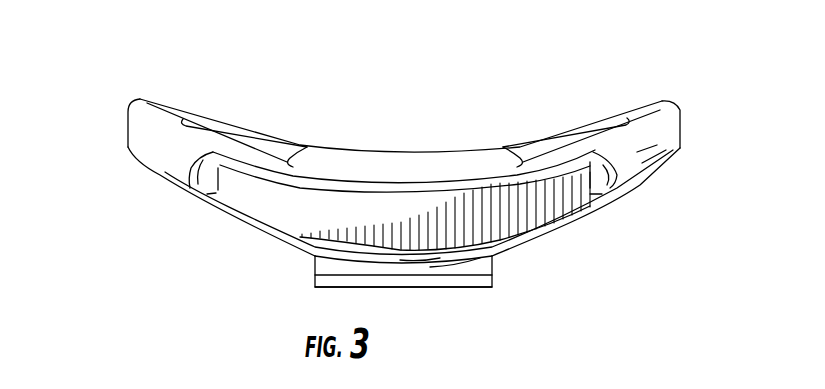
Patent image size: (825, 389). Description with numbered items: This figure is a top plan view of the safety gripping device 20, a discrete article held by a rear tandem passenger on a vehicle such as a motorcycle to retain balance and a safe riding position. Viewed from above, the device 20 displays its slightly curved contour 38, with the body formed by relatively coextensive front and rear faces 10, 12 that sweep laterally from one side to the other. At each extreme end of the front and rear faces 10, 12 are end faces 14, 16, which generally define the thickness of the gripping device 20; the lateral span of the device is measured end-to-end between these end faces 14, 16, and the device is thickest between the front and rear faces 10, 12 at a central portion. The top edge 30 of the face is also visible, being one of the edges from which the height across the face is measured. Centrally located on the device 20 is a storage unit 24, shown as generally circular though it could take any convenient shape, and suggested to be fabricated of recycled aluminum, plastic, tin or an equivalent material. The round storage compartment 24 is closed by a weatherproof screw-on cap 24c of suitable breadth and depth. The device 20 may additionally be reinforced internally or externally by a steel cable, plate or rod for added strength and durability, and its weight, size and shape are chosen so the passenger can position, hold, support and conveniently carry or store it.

The front face 10 is at (290, 243).
The rear face 12 is at (275, 135).
The end face 14 is at (127, 148).
The end face 16 is at (672, 130).
The safety gripping device 20 is at (712, 83).
The central storage unit 24 is at (492, 258).
The screw-on cap 24c is at (393, 287).
The top edge 30 is at (257, 198).
The curved contour 38 is at (447, 157).